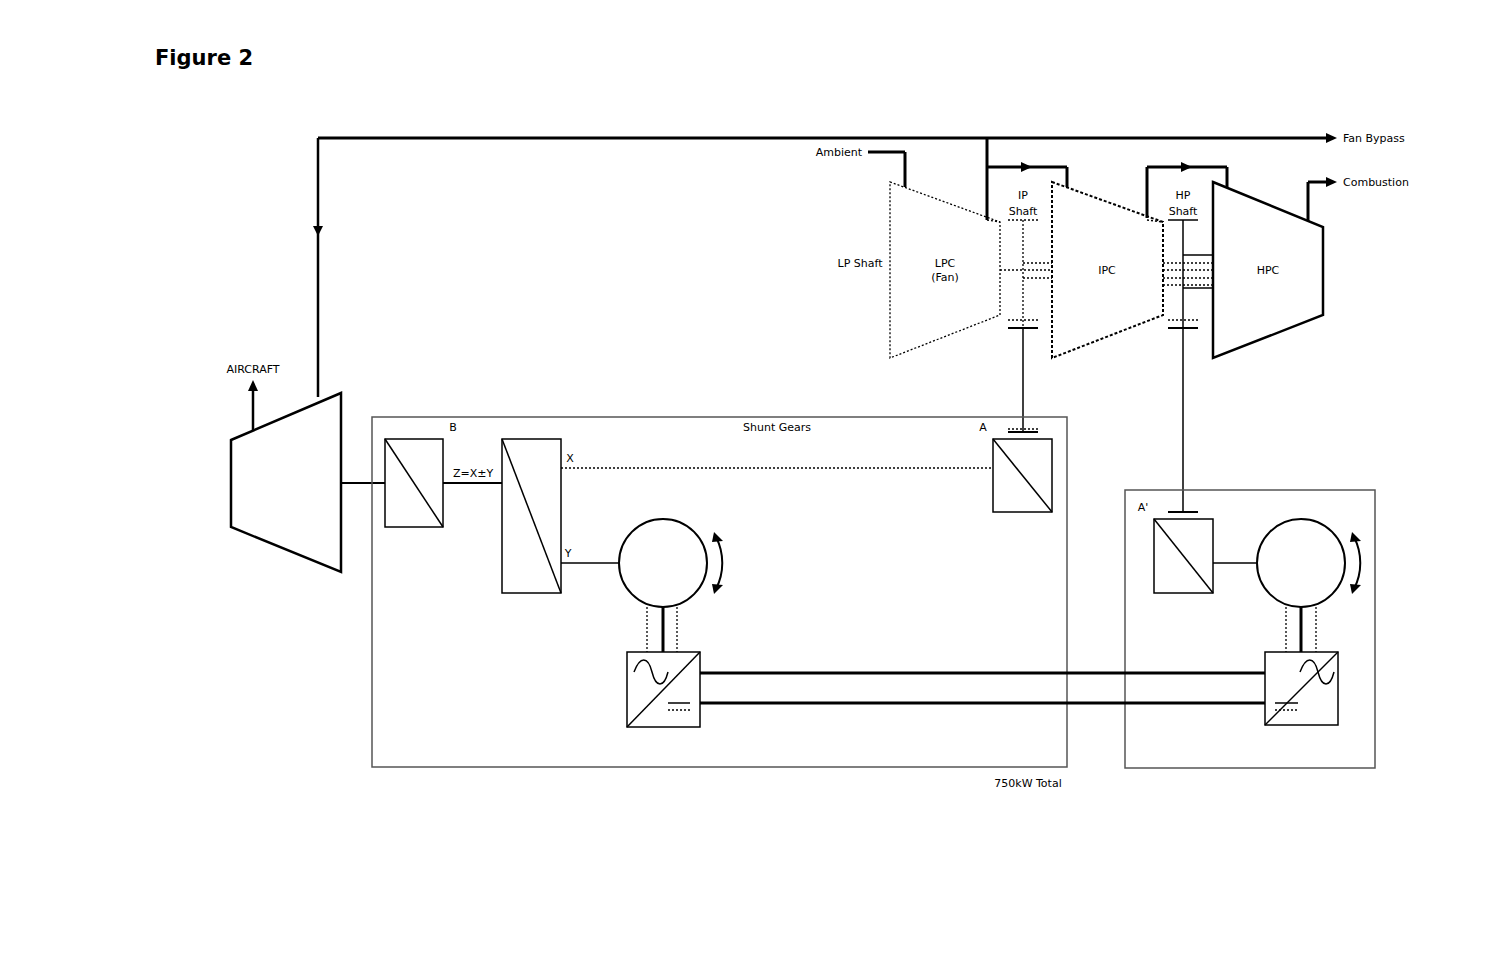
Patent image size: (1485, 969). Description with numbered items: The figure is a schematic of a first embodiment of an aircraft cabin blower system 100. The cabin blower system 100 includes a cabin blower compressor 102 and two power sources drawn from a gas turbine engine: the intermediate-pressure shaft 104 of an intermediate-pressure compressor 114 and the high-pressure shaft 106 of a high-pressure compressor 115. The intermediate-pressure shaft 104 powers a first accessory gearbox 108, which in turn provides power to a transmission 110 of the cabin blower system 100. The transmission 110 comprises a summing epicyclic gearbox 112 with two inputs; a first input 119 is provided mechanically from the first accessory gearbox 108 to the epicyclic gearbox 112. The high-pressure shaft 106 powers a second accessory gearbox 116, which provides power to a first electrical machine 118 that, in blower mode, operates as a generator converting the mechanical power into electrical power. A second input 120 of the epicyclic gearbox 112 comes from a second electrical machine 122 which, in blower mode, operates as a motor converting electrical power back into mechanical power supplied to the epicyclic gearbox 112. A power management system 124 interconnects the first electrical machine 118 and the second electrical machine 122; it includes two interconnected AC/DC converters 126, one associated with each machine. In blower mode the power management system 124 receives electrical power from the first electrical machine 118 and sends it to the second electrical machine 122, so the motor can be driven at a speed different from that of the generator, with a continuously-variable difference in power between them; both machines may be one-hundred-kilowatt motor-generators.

The aircraft cabin blower system 100 is at (1322, 60).
The cabin blower compressor 102 is at (231, 450).
The intermediate-pressure shaft 104 is at (1018, 293).
The high-pressure shaft 106 is at (1180, 293).
The first accessory gearbox 108 is at (993, 513).
The transmission 110 is at (415, 573).
The summing epicyclic gearbox 112 is at (507, 593).
The intermediate-pressure compressor 114 is at (1048, 188).
The high-pressure compressor 115 is at (1207, 197).
The second accessory gearbox 116 is at (1182, 594).
The first electrical machine 118 is at (1320, 523).
The first input 119 is at (571, 455).
The second input 120 is at (568, 566).
The second electrical machine 122 is at (677, 518).
The power management system 124 is at (1223, 732).
The AC/DC converters 126 is at (668, 727).